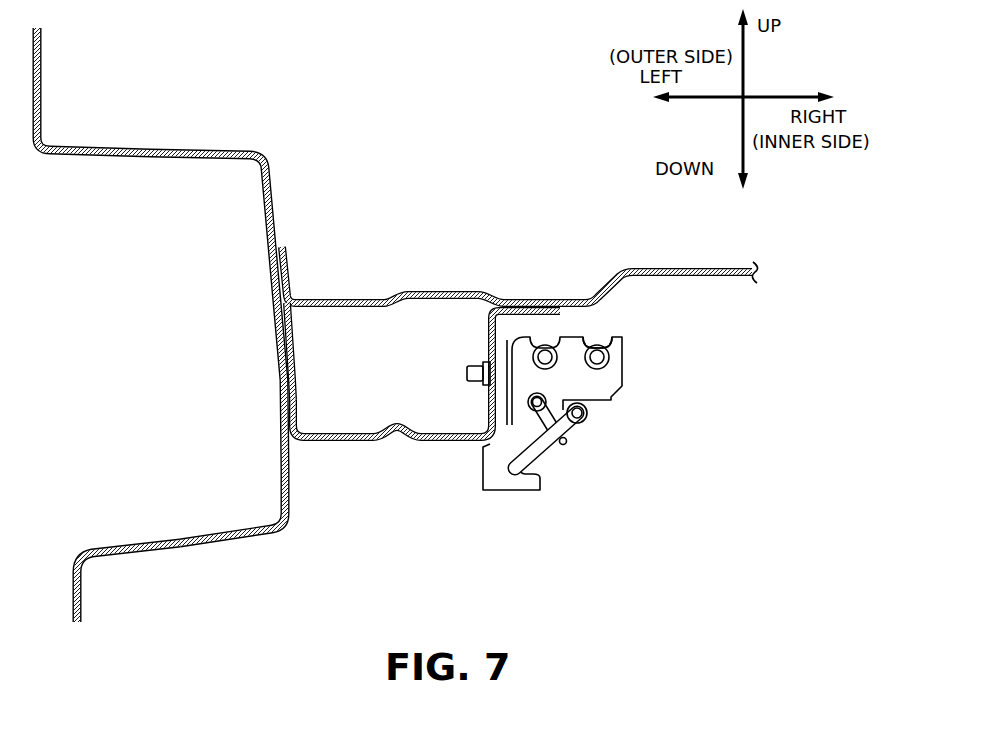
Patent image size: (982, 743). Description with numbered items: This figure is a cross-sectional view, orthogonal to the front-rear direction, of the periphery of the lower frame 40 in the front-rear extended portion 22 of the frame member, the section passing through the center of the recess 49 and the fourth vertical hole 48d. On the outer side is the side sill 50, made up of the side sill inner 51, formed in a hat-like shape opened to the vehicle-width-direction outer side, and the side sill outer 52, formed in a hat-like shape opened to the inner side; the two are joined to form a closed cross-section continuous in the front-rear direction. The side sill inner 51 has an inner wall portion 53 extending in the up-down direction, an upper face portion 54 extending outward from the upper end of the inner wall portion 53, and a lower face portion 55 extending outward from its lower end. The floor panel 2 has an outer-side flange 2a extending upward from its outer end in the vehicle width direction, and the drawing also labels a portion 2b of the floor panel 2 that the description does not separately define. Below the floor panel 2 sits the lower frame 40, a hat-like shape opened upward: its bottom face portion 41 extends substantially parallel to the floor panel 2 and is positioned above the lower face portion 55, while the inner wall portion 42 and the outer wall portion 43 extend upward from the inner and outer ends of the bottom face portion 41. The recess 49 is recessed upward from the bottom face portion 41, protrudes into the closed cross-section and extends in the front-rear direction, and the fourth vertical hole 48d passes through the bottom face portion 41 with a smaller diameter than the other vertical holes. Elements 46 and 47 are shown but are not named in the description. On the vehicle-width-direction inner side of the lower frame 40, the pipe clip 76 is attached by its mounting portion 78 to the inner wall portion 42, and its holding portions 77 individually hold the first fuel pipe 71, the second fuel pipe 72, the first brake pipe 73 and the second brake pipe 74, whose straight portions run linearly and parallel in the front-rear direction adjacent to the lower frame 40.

The floor panel 2 is at (520, 249).
The outer-side flange 2a is at (293, 272).
The flange portion of inner panel 2b is at (410, 296).
The front-rear extended portion 22 is at (436, 435).
The lower frame 40 is at (436, 435).
The bottom face portion 41 is at (437, 445).
The inner wall portion 42 is at (489, 335).
The outer wall portion 43 is at (297, 366).
The weld nut 46 is at (486, 354).
The upper flange of bracket 47 is at (512, 333).
The fourth vertical hole 48d is at (322, 445).
The recess 49 is at (386, 445).
The side sill 50 is at (191, 324).
The side sill inner 51 is at (274, 207).
The side sill outer 52 is at (127, 146).
The inner wall portion 53 is at (163, 549).
The upper face portion 54 is at (42, 73).
The lower face portion 55 is at (82, 597).
The first fuel pipe 71 is at (624, 388).
The second fuel pipe 72 is at (560, 371).
The first brake pipe 73 is at (615, 428).
The second brake pipe 74 is at (540, 470).
The pipe clip 76 is at (597, 399).
The holding portion 77 is at (599, 339).
The mounting portion 78 is at (482, 386).